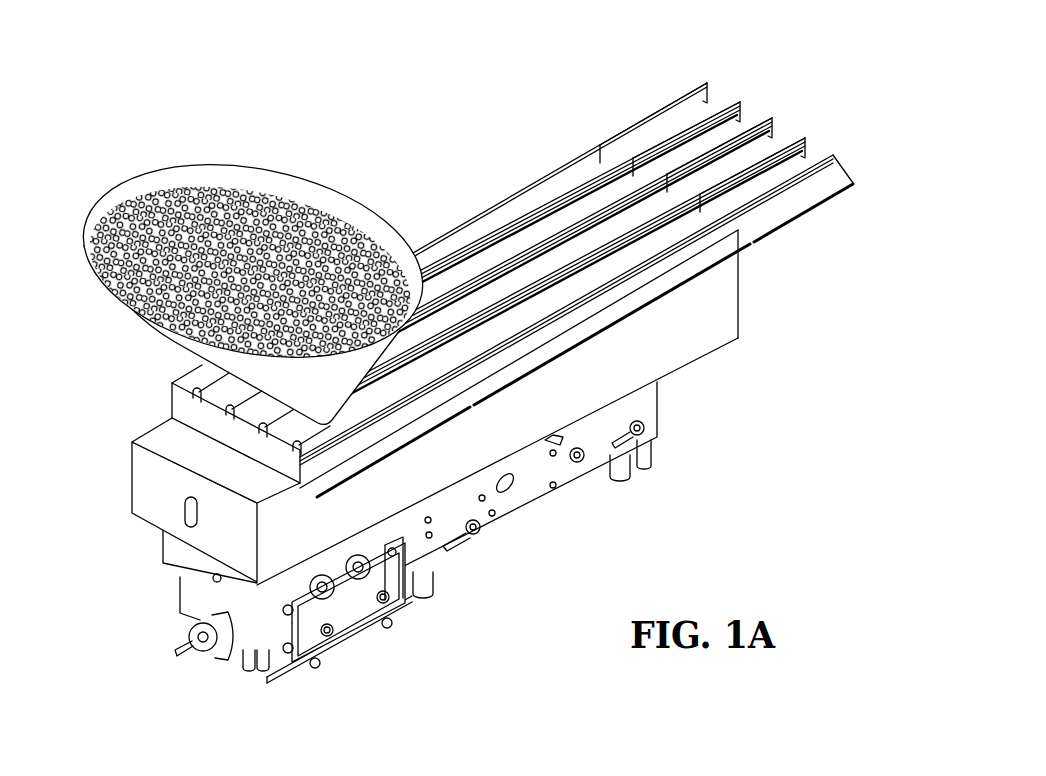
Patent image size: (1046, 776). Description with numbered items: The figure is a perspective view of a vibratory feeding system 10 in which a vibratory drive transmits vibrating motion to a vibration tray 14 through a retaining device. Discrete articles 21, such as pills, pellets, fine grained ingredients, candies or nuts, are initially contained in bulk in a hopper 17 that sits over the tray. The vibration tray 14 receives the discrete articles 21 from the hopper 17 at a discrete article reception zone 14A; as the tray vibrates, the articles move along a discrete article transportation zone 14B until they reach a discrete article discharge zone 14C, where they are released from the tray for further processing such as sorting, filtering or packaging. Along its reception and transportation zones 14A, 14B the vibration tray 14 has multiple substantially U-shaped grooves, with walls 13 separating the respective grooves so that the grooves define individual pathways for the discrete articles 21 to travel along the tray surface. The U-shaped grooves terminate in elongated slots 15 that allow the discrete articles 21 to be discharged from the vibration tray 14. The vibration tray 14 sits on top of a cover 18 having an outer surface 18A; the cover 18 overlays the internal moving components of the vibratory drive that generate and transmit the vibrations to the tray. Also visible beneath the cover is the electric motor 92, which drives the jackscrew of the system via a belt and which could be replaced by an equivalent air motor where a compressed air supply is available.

The vibratory feeding system 10 is at (296, 107).
The walls 13 is at (592, 287).
The vibration tray 14 is at (212, 424).
The discrete article reception zone 14A is at (393, 456).
The discrete article transportation zone 14B is at (612, 324).
The discrete article discharge zone 14C is at (803, 218).
The elongated slots 15 is at (695, 112).
The hopper 17 is at (86, 216).
The cover 18 is at (708, 323).
The outer surface 18A is at (722, 291).
The discrete articles 21 is at (293, 217).
The electric motor 92 is at (221, 642).